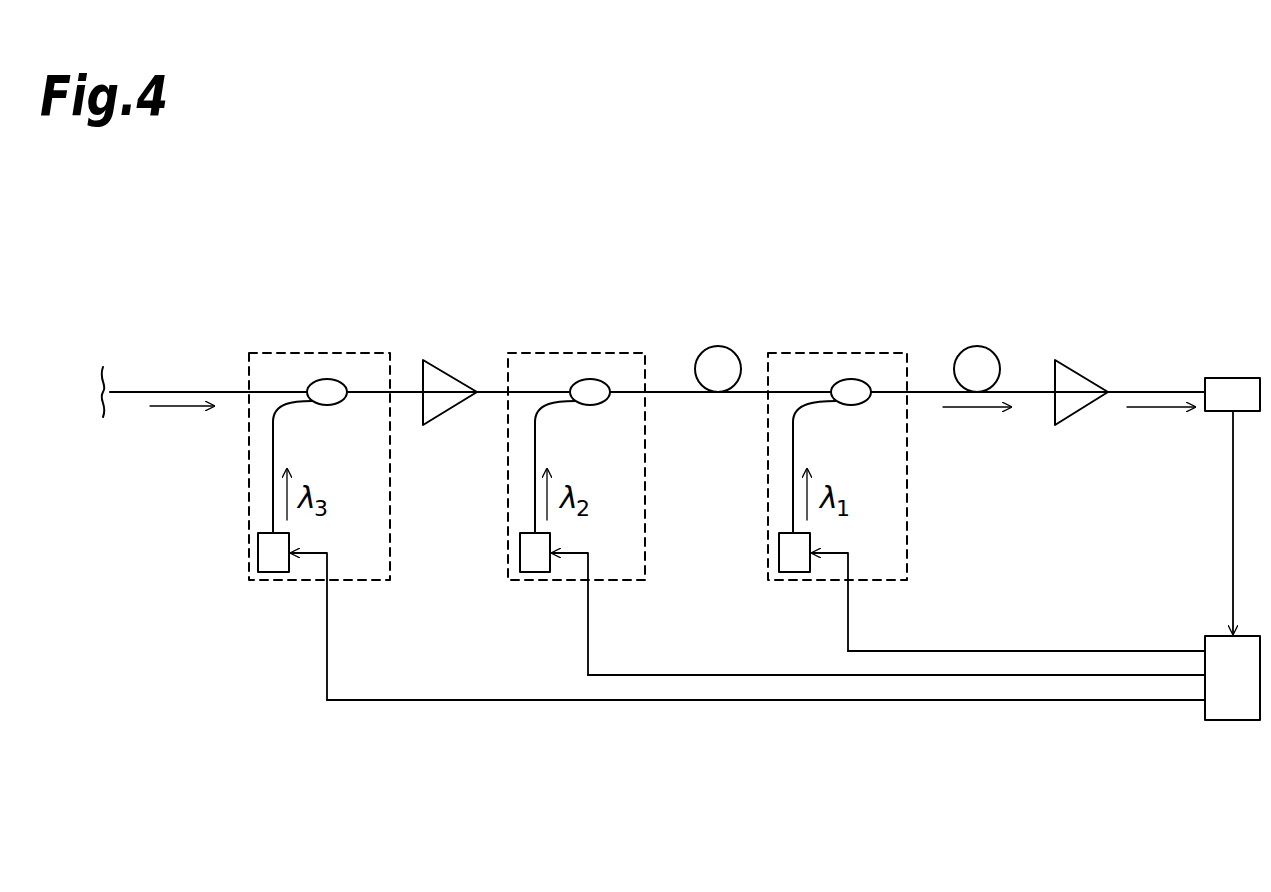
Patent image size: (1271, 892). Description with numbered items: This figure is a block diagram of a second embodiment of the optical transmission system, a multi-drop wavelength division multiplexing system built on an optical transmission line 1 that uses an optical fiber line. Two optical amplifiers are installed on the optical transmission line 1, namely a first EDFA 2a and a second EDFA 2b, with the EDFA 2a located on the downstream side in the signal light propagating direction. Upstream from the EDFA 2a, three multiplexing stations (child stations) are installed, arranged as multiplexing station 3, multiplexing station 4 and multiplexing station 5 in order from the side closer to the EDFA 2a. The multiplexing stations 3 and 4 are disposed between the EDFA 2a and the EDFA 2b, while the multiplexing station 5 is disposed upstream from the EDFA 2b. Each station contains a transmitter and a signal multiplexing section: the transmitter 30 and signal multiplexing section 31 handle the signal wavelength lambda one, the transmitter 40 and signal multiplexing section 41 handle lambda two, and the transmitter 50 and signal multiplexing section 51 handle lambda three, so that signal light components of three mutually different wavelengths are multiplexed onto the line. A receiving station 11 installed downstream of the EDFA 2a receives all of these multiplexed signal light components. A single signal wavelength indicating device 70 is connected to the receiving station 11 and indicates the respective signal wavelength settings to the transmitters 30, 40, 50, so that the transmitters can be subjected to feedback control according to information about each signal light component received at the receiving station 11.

The optical transmission line 1 is at (707, 342).
The first EDFA 2a is at (1082, 370).
The second EDFA 2b is at (450, 370).
The multiplexing station 3 is at (857, 350).
The multiplexing station 4 is at (597, 350).
The multiplexing station 5 is at (333, 350).
The receiving station 11 is at (1228, 376).
The transmitter 30 is at (779, 550).
The signal multiplexing section 31 is at (856, 406).
The transmitter 40 is at (520, 550).
The signal multiplexing section 41 is at (595, 406).
The transmitter 50 is at (258, 550).
The signal multiplexing section 51 is at (332, 406).
The signal wavelength indicating device 70 is at (1222, 722).